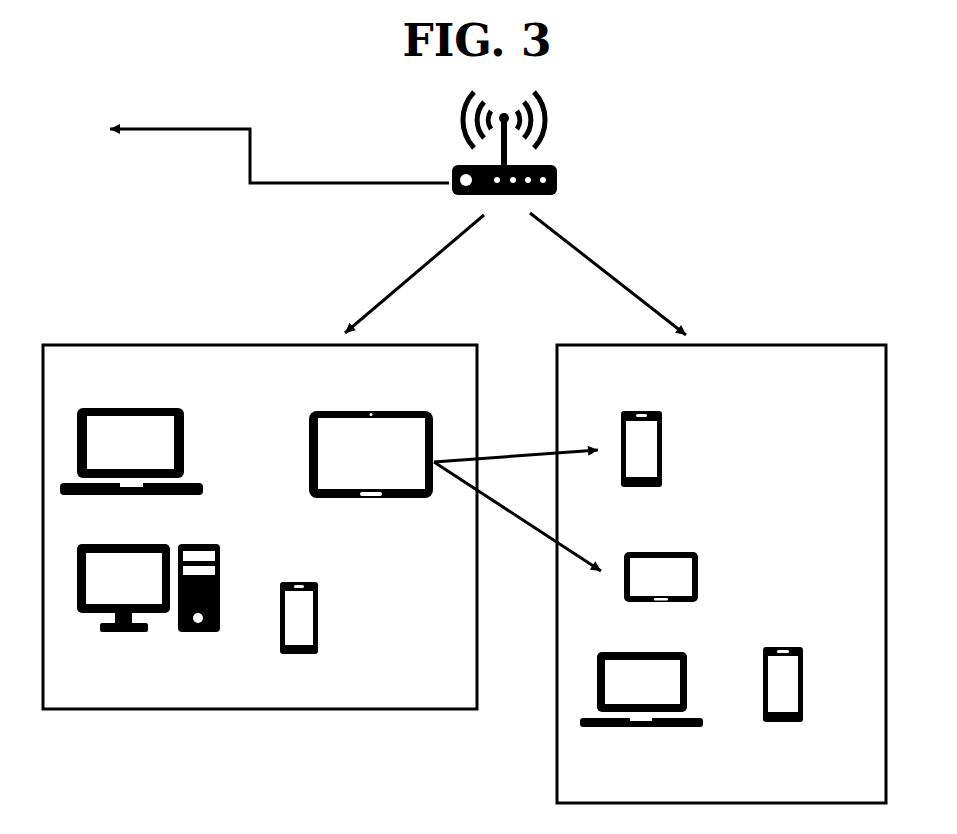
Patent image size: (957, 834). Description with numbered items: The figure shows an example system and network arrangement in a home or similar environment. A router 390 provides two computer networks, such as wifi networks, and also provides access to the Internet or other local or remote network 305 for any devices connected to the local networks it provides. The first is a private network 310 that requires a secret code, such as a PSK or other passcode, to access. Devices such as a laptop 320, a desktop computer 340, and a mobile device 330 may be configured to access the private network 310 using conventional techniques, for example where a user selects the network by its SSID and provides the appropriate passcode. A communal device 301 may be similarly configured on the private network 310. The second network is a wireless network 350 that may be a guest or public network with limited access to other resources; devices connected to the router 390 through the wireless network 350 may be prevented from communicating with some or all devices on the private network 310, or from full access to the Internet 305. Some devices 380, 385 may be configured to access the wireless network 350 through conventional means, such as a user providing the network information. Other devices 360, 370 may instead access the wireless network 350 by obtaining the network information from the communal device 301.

The Internet or other local or remote network 305 is at (72, 137).
The router 390 is at (628, 177).
The private network 310 is at (99, 383).
The laptop 320 is at (233, 469).
The communal device 301 is at (393, 533).
The desktop computer 340 is at (178, 669).
The mobile device 330 is at (316, 692).
The wireless network 350 is at (611, 383).
The device 360 is at (715, 465).
The device 370 is at (749, 584).
The device 380 is at (667, 766).
The device 385 is at (801, 758).